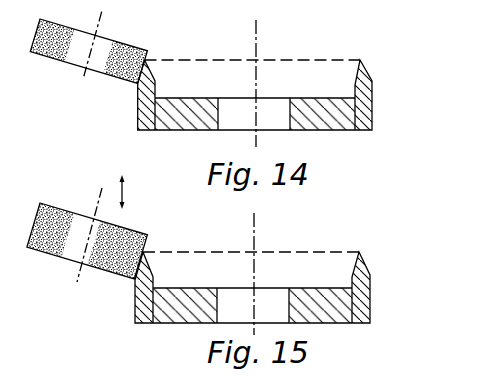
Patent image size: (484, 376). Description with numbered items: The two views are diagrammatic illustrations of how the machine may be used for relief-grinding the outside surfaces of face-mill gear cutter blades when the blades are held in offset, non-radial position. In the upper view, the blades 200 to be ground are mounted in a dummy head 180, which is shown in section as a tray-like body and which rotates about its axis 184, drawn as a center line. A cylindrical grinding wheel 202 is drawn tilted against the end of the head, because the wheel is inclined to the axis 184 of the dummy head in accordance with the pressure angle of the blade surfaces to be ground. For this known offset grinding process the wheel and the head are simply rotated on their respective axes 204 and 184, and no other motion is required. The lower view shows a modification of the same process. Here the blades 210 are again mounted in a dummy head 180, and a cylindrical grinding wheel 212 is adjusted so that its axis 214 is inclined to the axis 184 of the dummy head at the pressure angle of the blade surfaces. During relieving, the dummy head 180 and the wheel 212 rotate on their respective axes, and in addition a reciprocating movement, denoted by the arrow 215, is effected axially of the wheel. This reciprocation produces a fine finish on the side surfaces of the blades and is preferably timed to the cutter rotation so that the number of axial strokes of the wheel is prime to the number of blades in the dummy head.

In FIG. 14, the dummy head 180 is at (187, 123).
In FIG. 15, the dummy head 180 is at (183, 312).
In FIG. 14, the axis of the dummy head 184 is at (256, 47).
In FIG. 15, the axis of the dummy head 184 is at (254, 242).
In FIG. 14, the blades 200 is at (370, 88).
In FIG. 14, the cylindrical grinding wheel 202 is at (78, 57).
In FIG. 14, the axis of the grinding wheel 204 is at (100, 25).
In FIG. 15, the blades 210 is at (369, 280).
In FIG. 15, the cylindrical grinding wheel 212 is at (72, 257).
In FIG. 15, the axis of the grinding wheel 214 is at (95, 216).
In FIG. 15, the arrow denoting reciprocating movement 215 is at (125, 192).